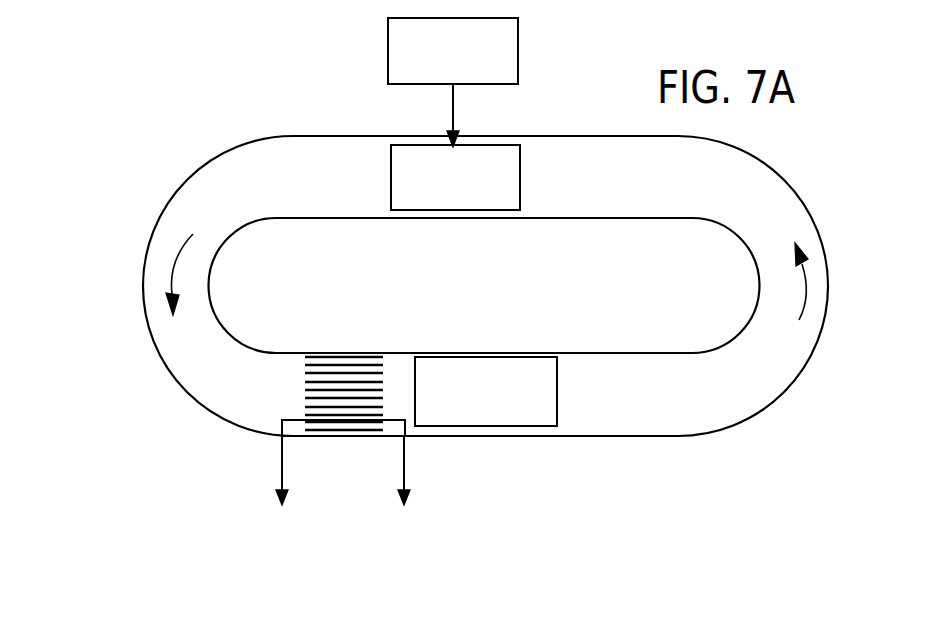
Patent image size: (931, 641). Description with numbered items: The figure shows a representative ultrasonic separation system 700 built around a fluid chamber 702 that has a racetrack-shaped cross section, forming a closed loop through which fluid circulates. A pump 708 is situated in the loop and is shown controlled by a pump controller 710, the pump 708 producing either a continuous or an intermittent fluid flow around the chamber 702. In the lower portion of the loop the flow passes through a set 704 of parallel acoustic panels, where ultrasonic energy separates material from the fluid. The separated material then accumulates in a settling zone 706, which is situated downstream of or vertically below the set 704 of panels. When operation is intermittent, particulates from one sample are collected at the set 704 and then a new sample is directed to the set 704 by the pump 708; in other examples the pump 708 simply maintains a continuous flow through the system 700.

The separation system 700 is at (155, 415).
The fluid chamber 702 is at (217, 155).
The set of acoustic panels 704 is at (305, 388).
The settling zone 706 is at (547, 389).
The pump 708 is at (391, 185).
The pump controller 710 is at (388, 61).